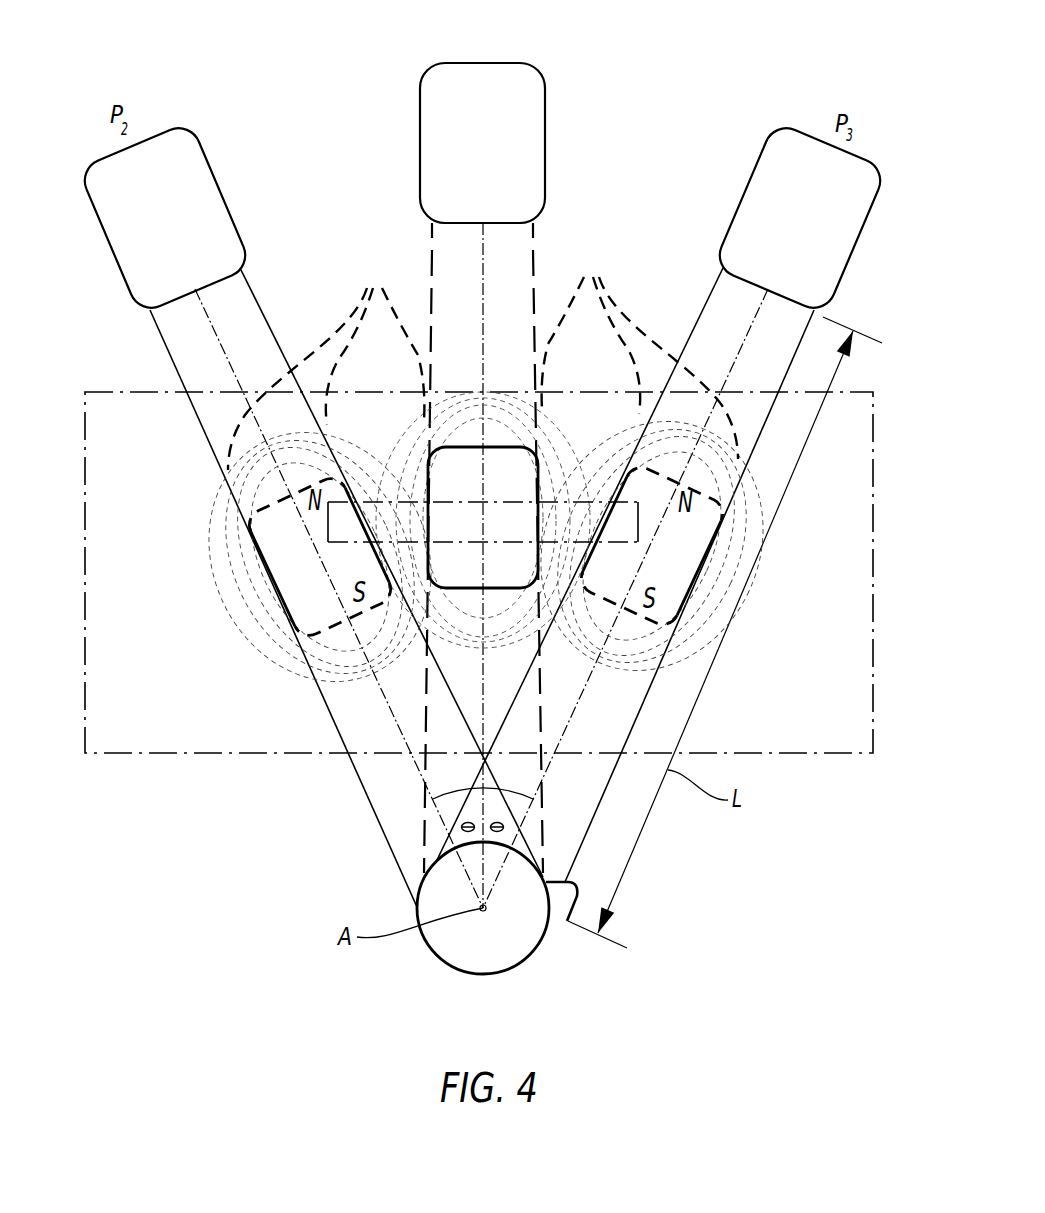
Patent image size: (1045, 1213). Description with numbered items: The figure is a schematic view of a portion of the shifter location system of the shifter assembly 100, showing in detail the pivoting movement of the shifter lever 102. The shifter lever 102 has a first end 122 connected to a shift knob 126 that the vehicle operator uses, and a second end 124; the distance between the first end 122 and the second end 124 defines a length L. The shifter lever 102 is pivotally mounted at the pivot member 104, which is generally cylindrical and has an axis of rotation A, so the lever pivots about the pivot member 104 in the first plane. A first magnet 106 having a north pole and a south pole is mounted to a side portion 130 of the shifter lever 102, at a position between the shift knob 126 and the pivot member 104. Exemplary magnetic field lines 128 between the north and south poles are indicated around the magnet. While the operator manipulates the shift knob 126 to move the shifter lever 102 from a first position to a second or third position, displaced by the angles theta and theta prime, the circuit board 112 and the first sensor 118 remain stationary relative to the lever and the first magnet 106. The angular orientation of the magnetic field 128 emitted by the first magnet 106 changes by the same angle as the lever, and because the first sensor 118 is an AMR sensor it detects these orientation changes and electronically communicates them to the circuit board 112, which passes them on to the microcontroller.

The shifter assembly 100 is at (249, 52).
The shifter lever 102 is at (432, 236).
The pivot member 104 is at (432, 946).
The first magnet 106 is at (527, 455).
The circuit board 112 is at (220, 756).
The first sensor 118 is at (353, 500).
The first end 122 is at (533, 235).
The second end 124 is at (565, 883).
The shift knob 126 is at (545, 127).
The magnetic field lines 128 is at (483, 356).
The side portion 130 is at (229, 302).